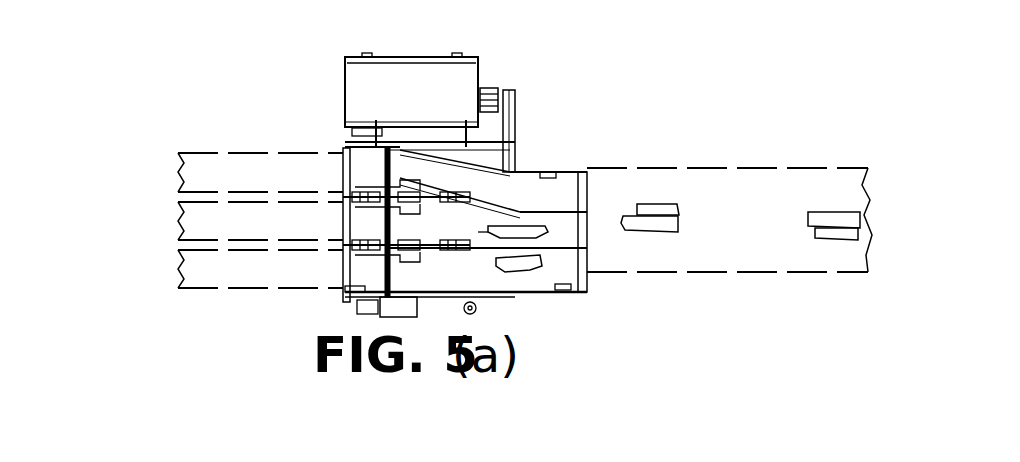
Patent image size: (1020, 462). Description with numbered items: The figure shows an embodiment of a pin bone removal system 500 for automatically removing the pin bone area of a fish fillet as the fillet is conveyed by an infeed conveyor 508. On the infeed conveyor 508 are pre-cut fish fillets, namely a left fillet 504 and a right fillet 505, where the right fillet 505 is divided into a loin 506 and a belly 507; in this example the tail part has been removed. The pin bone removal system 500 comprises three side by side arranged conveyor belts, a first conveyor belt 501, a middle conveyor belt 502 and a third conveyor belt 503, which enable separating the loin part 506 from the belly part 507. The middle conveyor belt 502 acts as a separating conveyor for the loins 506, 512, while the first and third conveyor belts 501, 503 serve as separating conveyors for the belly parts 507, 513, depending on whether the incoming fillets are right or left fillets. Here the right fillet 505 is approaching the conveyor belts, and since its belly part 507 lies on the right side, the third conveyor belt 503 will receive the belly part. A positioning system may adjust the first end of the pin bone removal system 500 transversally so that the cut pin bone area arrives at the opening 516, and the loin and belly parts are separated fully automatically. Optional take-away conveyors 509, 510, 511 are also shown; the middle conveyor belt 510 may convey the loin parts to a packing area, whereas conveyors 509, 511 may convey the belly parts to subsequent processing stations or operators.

The pin bone removal system 500 is at (816, 94).
The first conveyor belt 501 is at (465, 232).
The middle conveyor belt 502 is at (465, 205).
The third conveyor belt 503 is at (493, 170).
The left fillet 504 is at (848, 195).
The right fillet 505 is at (681, 199).
The loin 506 is at (665, 232).
The belly 507 is at (676, 207).
The infeed conveyor 508 is at (729, 220).
The take-away conveyor 509 is at (260, 269).
The middle take-away conveyor belt 510 is at (260, 221).
The take-away conveyor 511 is at (260, 172).
The loin 512 is at (530, 233).
The belly part 513 is at (540, 272).
The opening 516 is at (450, 201).